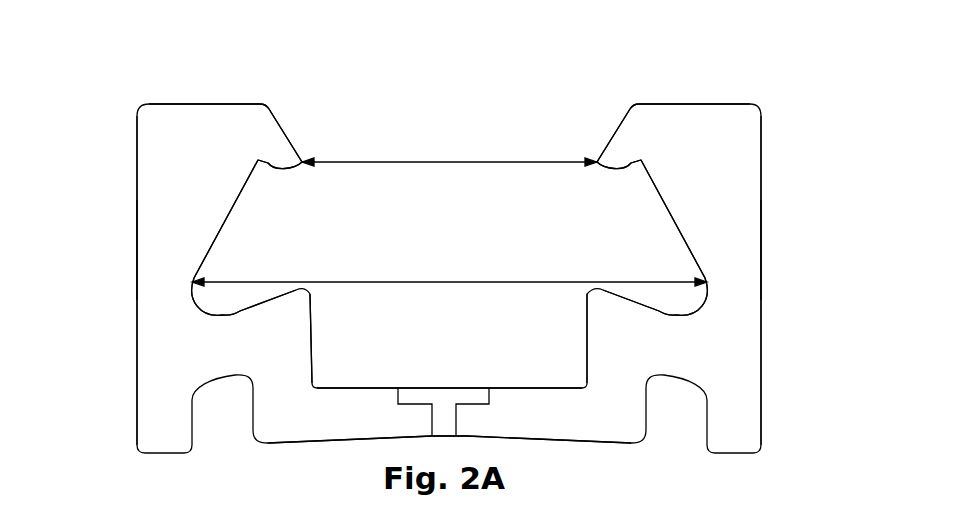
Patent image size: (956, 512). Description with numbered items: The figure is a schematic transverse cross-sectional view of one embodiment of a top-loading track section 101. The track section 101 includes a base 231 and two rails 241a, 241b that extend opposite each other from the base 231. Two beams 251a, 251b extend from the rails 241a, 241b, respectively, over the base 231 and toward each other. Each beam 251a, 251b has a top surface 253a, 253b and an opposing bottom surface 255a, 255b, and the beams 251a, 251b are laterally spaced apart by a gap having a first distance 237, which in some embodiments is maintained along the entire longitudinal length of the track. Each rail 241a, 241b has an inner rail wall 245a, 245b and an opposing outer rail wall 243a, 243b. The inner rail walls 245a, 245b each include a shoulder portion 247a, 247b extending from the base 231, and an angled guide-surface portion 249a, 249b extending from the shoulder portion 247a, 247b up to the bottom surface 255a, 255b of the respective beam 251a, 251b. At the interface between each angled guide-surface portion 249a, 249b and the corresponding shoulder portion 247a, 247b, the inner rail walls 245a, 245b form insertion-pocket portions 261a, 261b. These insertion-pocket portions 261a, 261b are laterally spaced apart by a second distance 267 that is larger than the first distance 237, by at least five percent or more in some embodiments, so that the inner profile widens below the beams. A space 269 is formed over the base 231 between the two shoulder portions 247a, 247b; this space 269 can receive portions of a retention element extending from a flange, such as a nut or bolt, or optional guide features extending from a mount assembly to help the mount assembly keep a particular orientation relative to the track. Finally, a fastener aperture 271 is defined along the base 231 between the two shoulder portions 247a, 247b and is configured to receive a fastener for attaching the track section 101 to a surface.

The top-loading track section 101 is at (525, 78).
The base 231 is at (538, 387).
The first distance 237 is at (432, 160).
The rail 241a is at (745, 173).
The rail 241b is at (152, 205).
The outer rail wall 243a is at (758, 234).
The outer rail wall 243b is at (137, 263).
The inner rail wall 245a is at (657, 192).
The inner rail wall 245b is at (241, 192).
The shoulder portion 247a is at (598, 303).
The shoulder portion 247b is at (293, 311).
The angled guide-surface portion 249a is at (672, 218).
The angled guide-surface portion 249b is at (225, 222).
The beam 251a is at (705, 120).
The beam 251b is at (189, 120).
The top surface 253a is at (662, 103).
The top surface 253b is at (231, 103).
The bottom surface 255a is at (629, 167).
The bottom surface 255b is at (270, 167).
The insertion-pocket portion 261a is at (654, 270).
The insertion-pocket portion 261b is at (245, 270).
The second distance 267 is at (450, 284).
The space 269 is at (367, 356).
The fastener aperture 271 is at (443, 395).